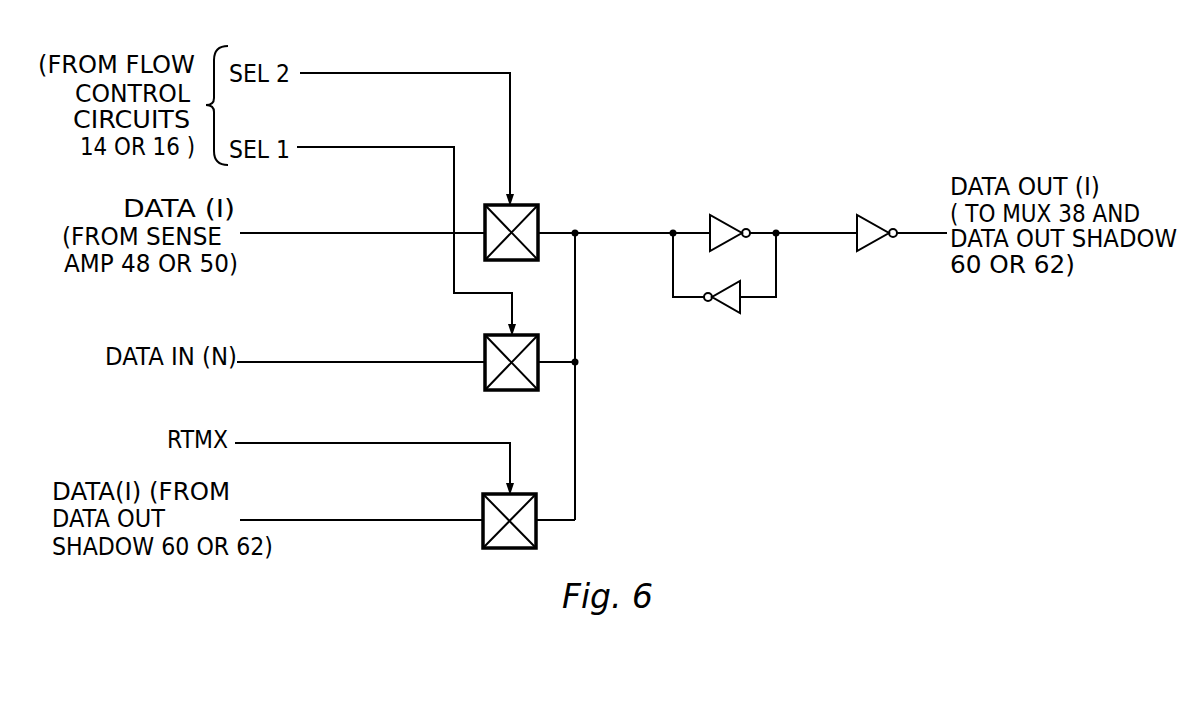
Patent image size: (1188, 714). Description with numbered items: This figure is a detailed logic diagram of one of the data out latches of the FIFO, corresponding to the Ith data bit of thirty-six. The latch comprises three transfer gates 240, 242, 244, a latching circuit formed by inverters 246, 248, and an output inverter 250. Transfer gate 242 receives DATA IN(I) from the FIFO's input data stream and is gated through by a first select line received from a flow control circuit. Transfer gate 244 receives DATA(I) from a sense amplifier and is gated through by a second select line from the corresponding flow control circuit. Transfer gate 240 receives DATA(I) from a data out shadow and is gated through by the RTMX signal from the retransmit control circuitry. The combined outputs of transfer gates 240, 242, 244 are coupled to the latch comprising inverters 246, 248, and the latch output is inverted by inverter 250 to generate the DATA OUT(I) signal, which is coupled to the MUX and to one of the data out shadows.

The transfer gate 240 is at (484, 507).
The transfer gate 242 is at (486, 350).
The transfer gate 244 is at (528, 212).
The inverter 246 is at (735, 312).
The inverter 248 is at (718, 222).
The output inverter 250 is at (862, 220).